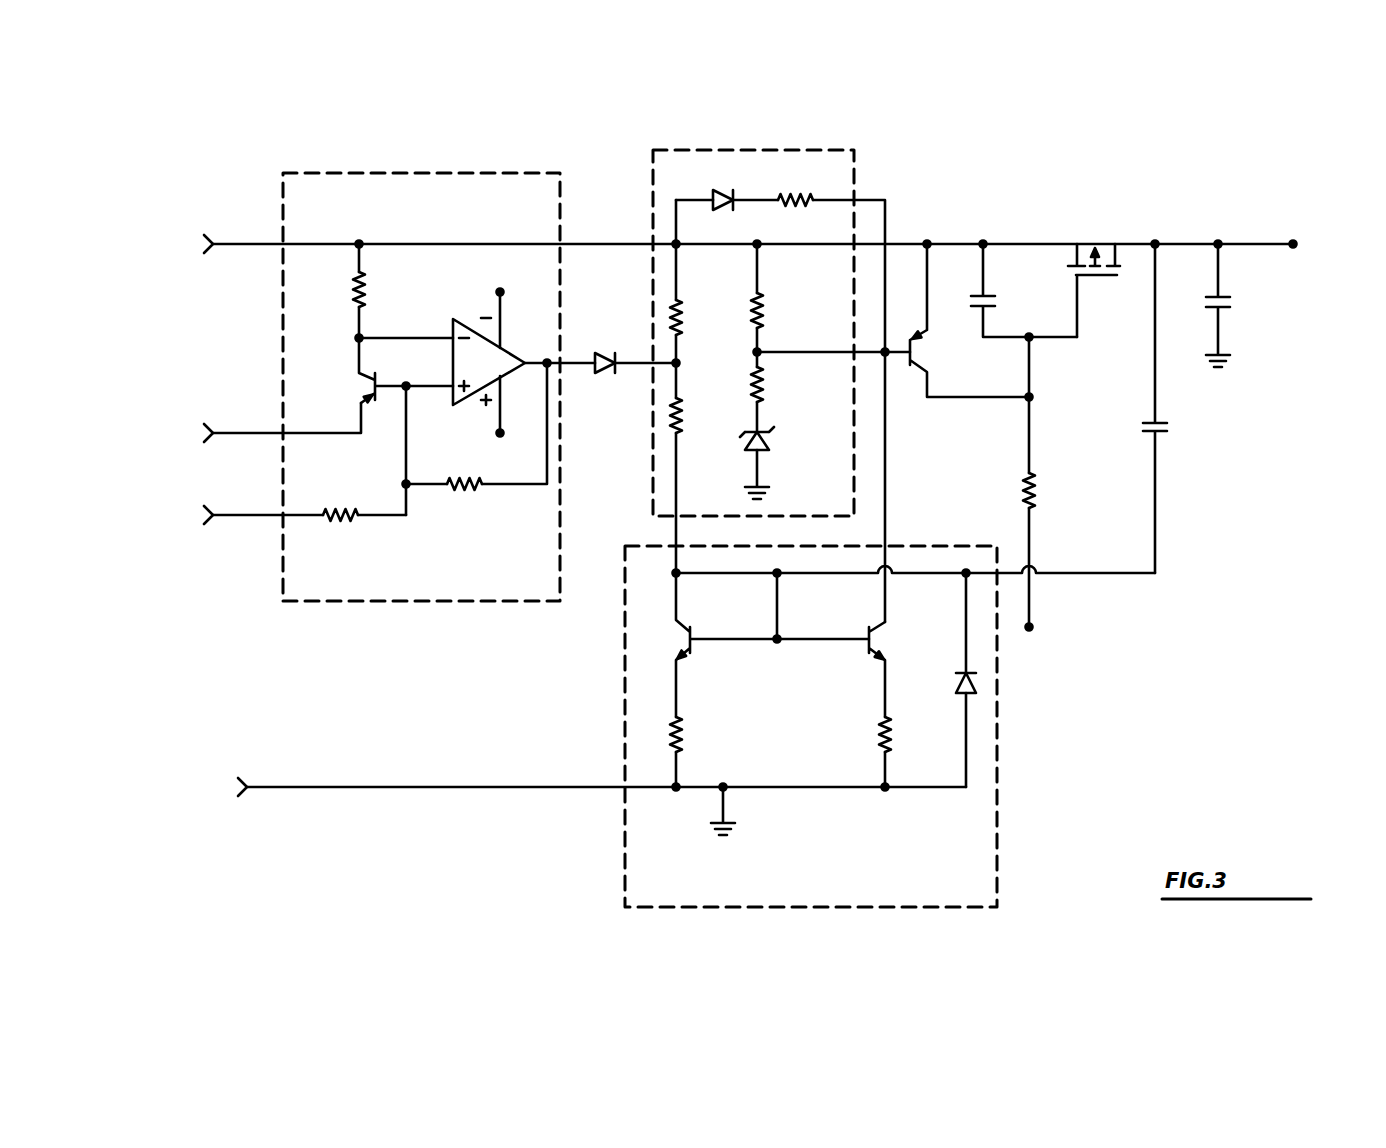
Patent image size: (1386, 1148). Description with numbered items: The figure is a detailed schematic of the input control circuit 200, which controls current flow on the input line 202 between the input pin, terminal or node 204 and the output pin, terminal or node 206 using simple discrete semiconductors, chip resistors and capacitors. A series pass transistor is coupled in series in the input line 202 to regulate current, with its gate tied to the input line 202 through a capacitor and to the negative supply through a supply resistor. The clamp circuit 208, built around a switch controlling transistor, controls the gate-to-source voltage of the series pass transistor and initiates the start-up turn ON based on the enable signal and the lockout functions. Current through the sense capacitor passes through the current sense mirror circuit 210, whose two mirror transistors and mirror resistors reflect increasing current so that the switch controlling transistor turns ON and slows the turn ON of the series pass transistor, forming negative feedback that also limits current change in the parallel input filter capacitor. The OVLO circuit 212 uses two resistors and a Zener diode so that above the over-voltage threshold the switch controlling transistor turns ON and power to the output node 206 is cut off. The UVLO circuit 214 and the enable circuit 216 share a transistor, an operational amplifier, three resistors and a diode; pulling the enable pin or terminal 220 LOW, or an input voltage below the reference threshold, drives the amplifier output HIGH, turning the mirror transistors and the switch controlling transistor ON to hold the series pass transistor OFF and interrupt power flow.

The input control circuit 200 is at (738, 505).
The input line 202 is at (248, 246).
The input pin, terminal or node 204 is at (214, 243).
The output pin, terminal or node 206 is at (1292, 244).
The clamp circuit 208 is at (953, 482).
The current sense mirror circuit 210 is at (625, 876).
The OVLO circuit 212 is at (704, 150).
The UVLO circuit 214 is at (416, 367).
The enable circuit 216 is at (334, 173).
The enable pin or terminal 220 is at (213, 432).